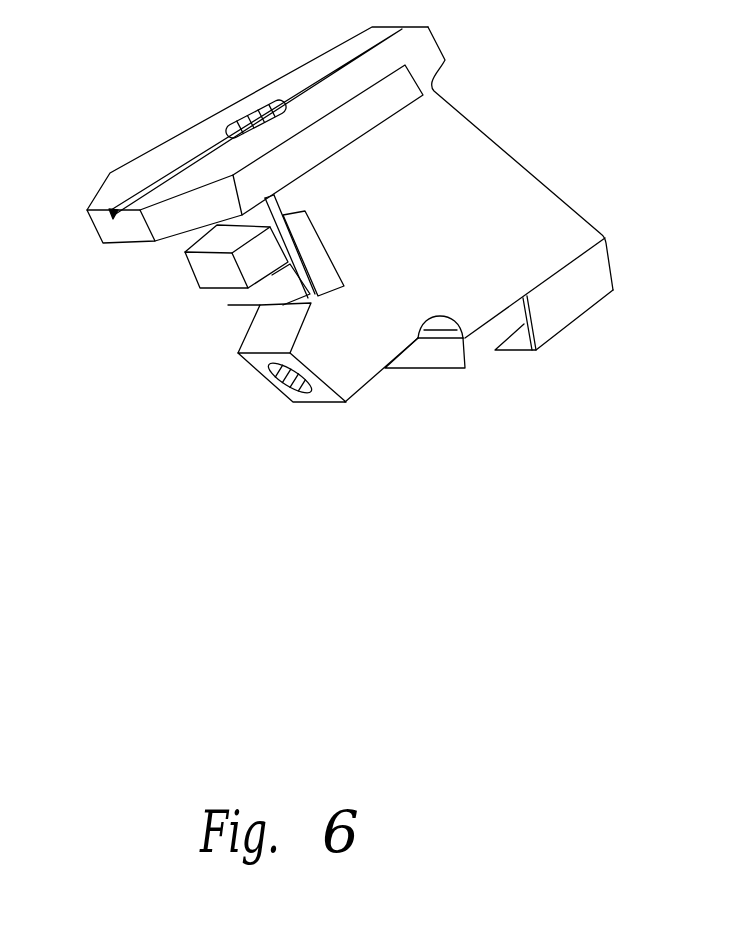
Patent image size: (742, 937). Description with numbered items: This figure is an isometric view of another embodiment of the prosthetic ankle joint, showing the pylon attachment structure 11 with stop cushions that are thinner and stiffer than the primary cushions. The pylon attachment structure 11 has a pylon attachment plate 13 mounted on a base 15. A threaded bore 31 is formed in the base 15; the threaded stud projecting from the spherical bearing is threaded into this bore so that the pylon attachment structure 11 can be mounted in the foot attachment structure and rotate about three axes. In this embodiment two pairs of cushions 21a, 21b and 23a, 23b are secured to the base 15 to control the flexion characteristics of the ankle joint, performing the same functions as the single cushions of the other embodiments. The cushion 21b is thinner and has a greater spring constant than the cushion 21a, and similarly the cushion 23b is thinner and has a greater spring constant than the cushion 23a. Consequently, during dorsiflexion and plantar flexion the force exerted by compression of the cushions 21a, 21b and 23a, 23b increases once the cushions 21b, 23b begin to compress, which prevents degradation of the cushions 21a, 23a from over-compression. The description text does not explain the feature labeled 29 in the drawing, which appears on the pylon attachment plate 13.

The pylon attachment structure 11 is at (578, 420).
The pylon attachment plate 13 is at (197, 138).
The base 15 is at (453, 185).
The cushion 21a is at (197, 262).
The cushion 21b is at (240, 299).
The cushion 23a is at (592, 280).
The cushion 23b is at (437, 357).
The groove with boss 29 is at (255, 123).
The threaded bore 31 is at (300, 383).